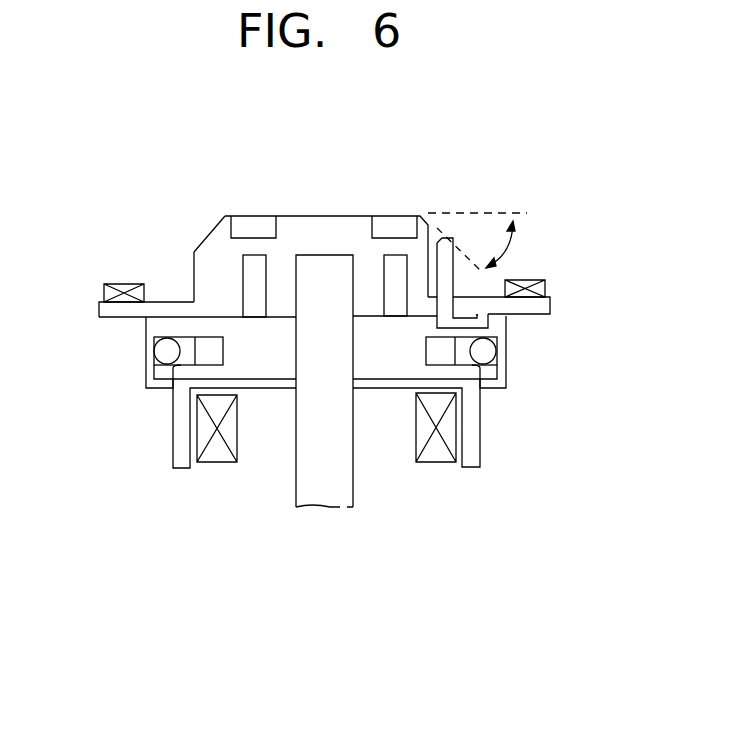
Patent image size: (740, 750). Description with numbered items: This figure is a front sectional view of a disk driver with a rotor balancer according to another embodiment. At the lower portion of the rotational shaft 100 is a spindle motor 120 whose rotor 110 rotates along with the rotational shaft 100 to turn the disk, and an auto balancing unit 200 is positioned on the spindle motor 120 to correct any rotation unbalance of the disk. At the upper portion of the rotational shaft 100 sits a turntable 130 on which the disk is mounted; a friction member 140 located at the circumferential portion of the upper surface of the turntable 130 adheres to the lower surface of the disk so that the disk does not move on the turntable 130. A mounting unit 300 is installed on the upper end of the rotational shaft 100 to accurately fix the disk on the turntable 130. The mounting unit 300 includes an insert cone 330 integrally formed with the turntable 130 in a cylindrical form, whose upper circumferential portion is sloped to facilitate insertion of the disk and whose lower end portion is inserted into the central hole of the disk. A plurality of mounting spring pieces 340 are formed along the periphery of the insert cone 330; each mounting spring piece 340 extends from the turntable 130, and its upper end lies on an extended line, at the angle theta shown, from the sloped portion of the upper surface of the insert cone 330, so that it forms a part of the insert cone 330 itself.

The rotational shaft 100 is at (328, 500).
The rotor 110 is at (215, 462).
The spindle motor 120 is at (180, 437).
The turntable 130 is at (110, 317).
The friction member 140 is at (125, 283).
The auto balancing unit 200 is at (507, 353).
The mounting unit 300 is at (372, 212).
The insert cone 330 is at (217, 222).
The mounting spring piece 340 is at (450, 243).